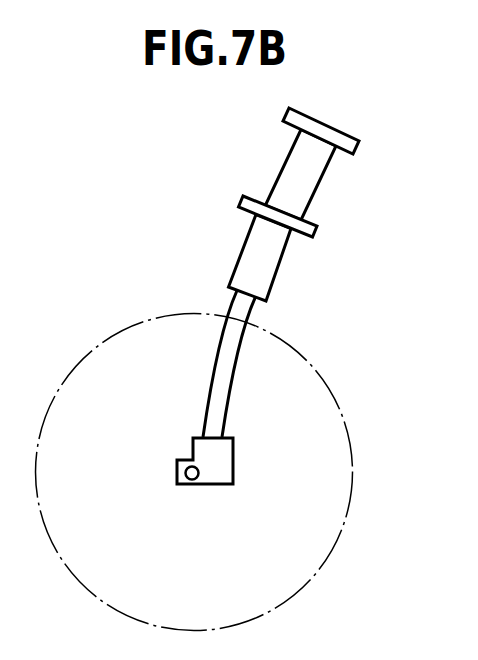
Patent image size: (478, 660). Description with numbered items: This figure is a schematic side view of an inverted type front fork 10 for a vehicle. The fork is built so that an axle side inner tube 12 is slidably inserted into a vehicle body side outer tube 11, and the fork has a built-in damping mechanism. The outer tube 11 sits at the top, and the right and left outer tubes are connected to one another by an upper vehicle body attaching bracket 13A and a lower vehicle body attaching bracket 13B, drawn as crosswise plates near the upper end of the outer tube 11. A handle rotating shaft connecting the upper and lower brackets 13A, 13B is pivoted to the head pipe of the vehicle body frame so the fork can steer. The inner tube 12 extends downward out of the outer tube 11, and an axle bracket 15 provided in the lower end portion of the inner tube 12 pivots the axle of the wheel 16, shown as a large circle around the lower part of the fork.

The inverted type front fork 10 is at (205, 178).
The vehicle body side outer tube 11 is at (305, 184).
The axle side inner tube 12 is at (223, 405).
The upper vehicle body attaching bracket 13A is at (354, 146).
The lower vehicle body attaching bracket 13B is at (315, 231).
The axle bracket 15 is at (223, 467).
The wheel 16 is at (352, 460).